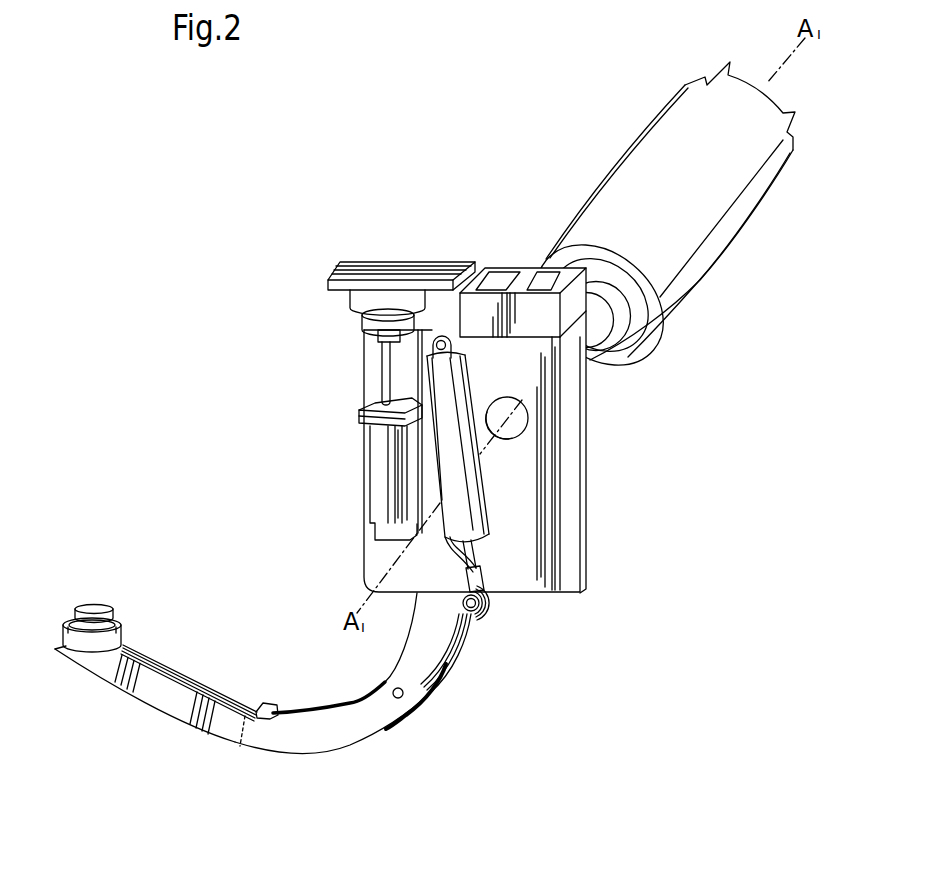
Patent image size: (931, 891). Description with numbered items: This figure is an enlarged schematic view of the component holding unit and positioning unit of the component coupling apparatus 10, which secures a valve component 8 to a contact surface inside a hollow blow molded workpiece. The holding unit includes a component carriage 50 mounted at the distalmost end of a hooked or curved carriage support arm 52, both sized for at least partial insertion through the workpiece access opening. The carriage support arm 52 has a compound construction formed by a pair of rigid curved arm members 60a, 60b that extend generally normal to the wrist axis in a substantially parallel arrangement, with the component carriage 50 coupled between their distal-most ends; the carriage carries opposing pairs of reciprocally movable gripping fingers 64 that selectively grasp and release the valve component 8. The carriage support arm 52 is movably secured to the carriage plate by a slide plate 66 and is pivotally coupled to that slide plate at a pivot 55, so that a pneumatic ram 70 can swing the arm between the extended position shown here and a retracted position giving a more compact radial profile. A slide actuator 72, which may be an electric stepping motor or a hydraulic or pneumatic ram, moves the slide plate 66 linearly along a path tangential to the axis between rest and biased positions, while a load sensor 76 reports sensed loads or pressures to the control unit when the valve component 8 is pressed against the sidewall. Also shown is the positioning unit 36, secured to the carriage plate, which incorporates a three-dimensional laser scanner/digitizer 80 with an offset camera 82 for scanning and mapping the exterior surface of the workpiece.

The positioning unit 36 is at (471, 253).
The three-dimensional laser scanner/digitizer 80 is at (488, 286).
The offset camera 82 is at (546, 280).
The load sensor 76 is at (348, 293).
The component coupling apparatus 10 is at (357, 362).
The slide plate 66 is at (373, 380).
The slide actuator 72 is at (385, 500).
The pneumatic ram 70 is at (466, 513).
The carriage support arm 52 is at (316, 733).
The pivot 55 is at (400, 699).
The component carriage 50 is at (57, 645).
The curved arm member 60a is at (147, 660).
The curved arm member 60b is at (183, 668).
The gripping fingers 64 is at (72, 618).
The valve component 8 is at (98, 604).